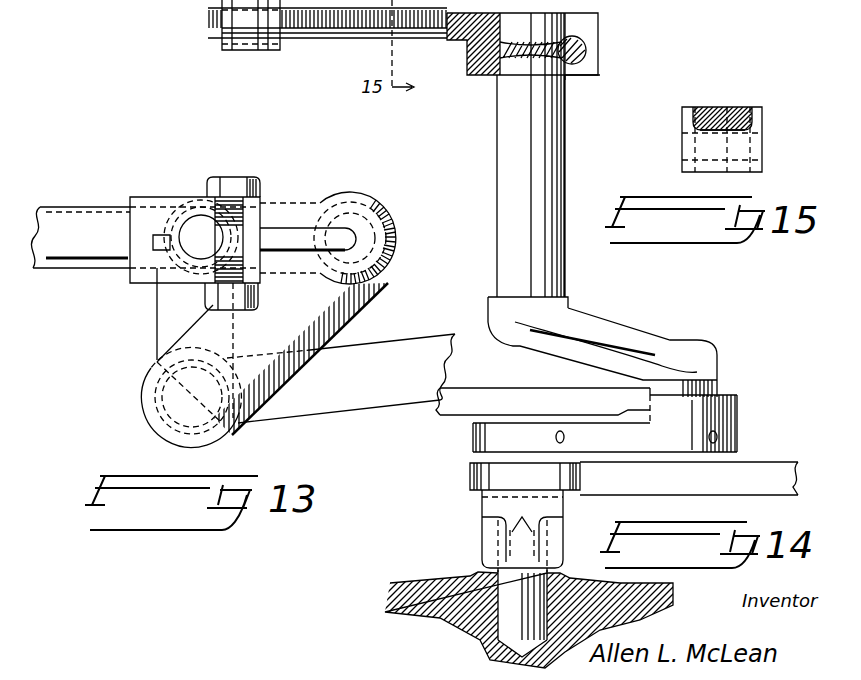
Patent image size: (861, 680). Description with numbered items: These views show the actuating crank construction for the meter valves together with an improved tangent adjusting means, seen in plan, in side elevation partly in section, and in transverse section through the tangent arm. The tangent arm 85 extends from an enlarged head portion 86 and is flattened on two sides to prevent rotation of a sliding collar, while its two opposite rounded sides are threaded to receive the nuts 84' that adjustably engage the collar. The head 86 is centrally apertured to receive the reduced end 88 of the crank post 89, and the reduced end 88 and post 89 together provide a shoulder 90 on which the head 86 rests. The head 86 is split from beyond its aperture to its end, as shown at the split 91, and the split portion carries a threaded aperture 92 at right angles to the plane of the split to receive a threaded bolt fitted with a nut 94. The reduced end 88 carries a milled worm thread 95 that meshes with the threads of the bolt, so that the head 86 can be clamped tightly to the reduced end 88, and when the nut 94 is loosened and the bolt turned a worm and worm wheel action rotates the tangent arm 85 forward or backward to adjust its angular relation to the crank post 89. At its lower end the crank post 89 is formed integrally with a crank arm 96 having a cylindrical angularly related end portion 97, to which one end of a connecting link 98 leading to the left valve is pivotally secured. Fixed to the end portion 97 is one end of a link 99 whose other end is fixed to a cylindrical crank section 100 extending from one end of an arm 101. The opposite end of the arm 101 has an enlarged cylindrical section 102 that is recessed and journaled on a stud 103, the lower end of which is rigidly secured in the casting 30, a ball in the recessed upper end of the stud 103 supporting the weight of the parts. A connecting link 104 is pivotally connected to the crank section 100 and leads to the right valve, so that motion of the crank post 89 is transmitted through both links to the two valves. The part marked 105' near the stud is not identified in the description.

In FIG. 14, the base 30 is at (598, 595).
In FIG. 14, the nut 84' is at (251, 44).
In FIG. 13, the threaded rod 85 is at (100, 232).
In FIG. 14, the threaded rod 85 is at (330, 38).
In FIG. 15, the threaded rod 85 is at (745, 110).
In FIG. 13, the clamp block 86 is at (160, 210).
In FIG. 14, the clamp block 86 is at (575, 30).
In FIG. 15, the clamp block 86 is at (740, 156).
In FIG. 13, the bolt shank 88 is at (235, 180).
In FIG. 14, the bolt shank 88 is at (522, 67).
In FIG. 14, the vertical shaft 89 is at (552, 132).
In FIG. 14, the shoulder 90 is at (570, 78).
In FIG. 13, the slot 91 is at (278, 230).
In FIG. 14, the slot 91 is at (590, 54).
In FIG. 14, the pin 92 is at (588, 48).
In FIG. 13, the upper nut 94 is at (260, 186).
In FIG. 13, the lower nut 95 is at (214, 290).
In FIG. 13, the arm 96 is at (378, 220).
In FIG. 14, the arm 96 is at (598, 335).
In FIG. 14, the pivot 97 is at (720, 386).
In FIG. 13, the plate 98 is at (70, 208).
In FIG. 14, the plate 98 is at (468, 404).
In FIG. 13, the link arm 99 is at (298, 327).
In FIG. 14, the link arm 99 is at (588, 436).
In FIG. 14, the nut 100 is at (488, 463).
In FIG. 13, the pivot bushing 101 is at (160, 343).
In FIG. 14, the stud 102 is at (500, 530).
In FIG. 14, the pin 103 is at (505, 590).
In FIG. 13, the bar 104 is at (363, 380).
In FIG. 14, the bar 104 is at (750, 486).
In FIG. 14, the spring pin 105' is at (487, 544).